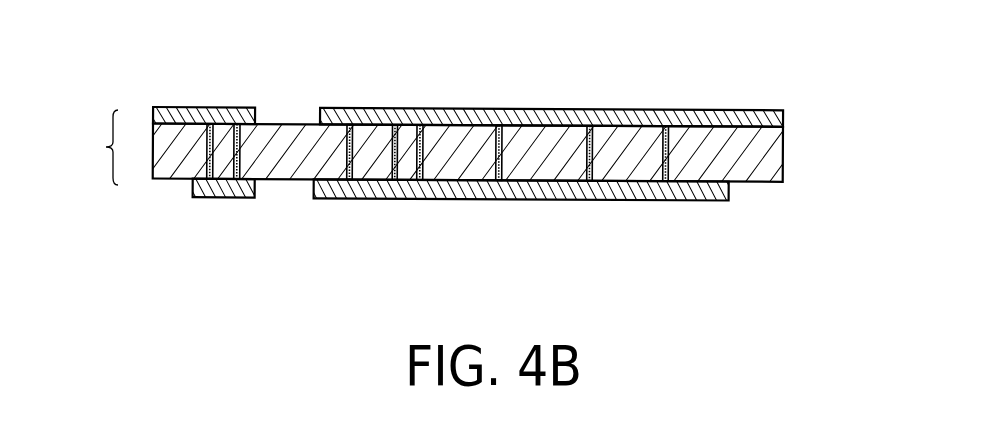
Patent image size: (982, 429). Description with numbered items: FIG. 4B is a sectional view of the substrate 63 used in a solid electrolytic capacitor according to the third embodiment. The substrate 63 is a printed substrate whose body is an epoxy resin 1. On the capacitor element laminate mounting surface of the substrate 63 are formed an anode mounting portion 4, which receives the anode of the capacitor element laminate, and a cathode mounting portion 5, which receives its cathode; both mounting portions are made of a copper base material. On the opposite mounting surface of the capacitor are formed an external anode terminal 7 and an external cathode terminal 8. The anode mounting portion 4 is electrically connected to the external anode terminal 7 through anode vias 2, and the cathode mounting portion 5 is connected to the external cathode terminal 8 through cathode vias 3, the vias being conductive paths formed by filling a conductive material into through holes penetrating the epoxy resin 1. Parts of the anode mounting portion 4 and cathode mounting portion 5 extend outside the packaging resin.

The epoxy resin 1 is at (748, 148).
The anode vias 2 is at (240, 152).
The cathode vias 3 is at (445, 180).
The anode mounting portion 4 is at (218, 110).
The cathode mounting portion 5 is at (700, 112).
The external anode terminal 7 is at (225, 196).
The external cathode terminal 8 is at (618, 198).
The substrate 63 is at (106, 147).